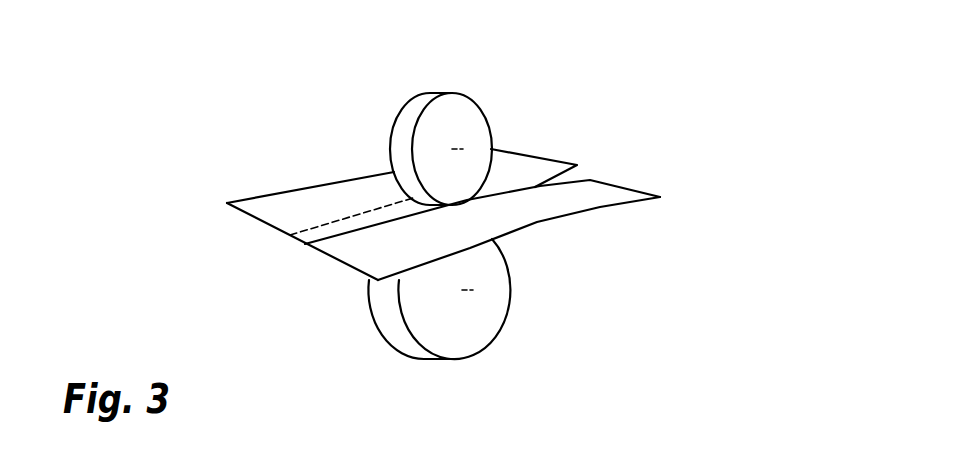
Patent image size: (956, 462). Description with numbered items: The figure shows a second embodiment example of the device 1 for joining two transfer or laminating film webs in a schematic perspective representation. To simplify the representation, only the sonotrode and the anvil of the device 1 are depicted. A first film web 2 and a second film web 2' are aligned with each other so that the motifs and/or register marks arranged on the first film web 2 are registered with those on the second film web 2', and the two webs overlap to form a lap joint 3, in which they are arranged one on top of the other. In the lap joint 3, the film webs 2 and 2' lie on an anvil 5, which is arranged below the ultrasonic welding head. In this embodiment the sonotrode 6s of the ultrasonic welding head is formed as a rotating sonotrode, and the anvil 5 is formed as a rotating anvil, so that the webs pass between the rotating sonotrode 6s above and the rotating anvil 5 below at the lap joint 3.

The device 1 is at (493, 217).
The first film web 2 is at (402, 207).
The second film web 2' is at (482, 208).
The lap joint 3 is at (290, 243).
The anvil 5 is at (402, 340).
The sonotrode 6s is at (470, 115).